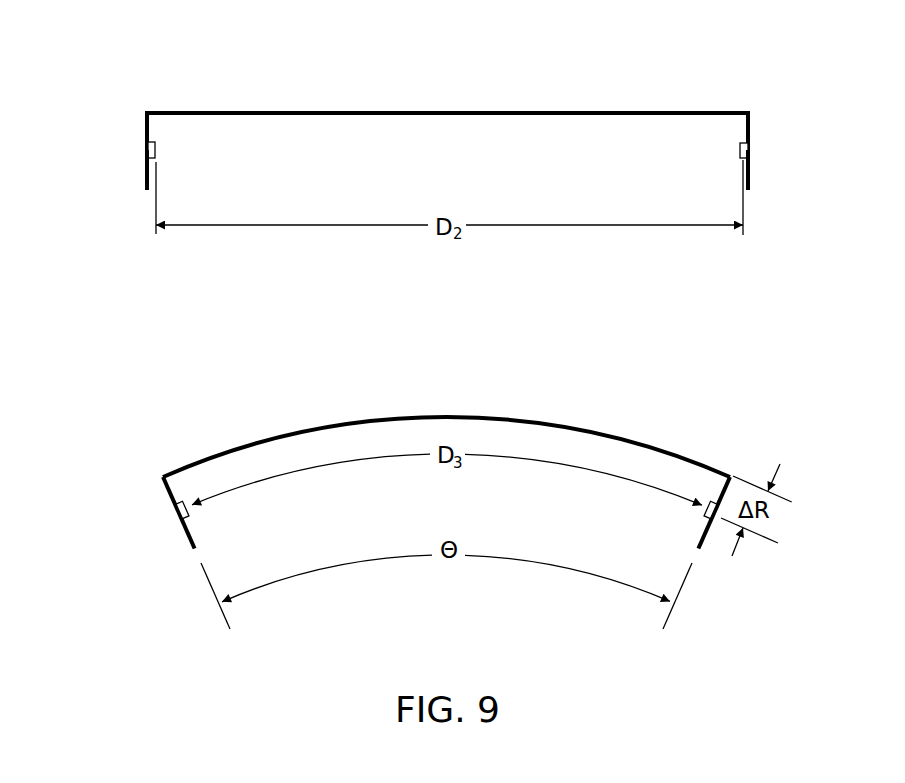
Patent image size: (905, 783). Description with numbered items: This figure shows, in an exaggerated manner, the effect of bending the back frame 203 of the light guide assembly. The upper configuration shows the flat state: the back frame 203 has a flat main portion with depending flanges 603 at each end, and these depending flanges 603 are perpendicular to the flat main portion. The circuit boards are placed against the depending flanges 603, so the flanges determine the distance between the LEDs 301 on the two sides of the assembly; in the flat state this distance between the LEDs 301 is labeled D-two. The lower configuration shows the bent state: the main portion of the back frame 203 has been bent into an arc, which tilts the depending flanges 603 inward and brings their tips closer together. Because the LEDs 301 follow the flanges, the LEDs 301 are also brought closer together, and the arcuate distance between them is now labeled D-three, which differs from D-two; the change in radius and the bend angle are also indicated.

The back frame 203 is at (312, 111).
The LEDs 301 is at (156, 145).
The depending flanges 603 is at (148, 176).